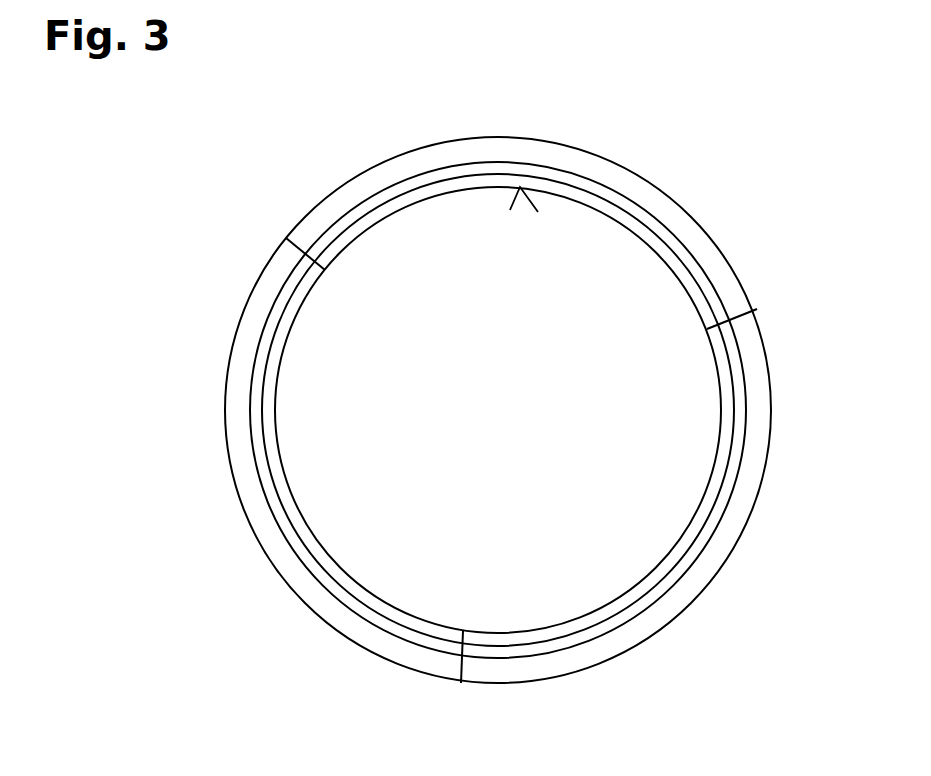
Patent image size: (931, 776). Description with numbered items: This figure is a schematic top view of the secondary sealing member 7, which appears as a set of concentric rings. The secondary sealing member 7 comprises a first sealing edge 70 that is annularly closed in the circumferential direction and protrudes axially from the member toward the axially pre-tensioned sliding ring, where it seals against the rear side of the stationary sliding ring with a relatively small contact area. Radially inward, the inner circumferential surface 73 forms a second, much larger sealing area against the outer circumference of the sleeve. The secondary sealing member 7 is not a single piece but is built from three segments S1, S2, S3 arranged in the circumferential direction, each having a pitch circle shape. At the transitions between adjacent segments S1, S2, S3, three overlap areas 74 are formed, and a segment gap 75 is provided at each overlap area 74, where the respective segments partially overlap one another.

The secondary sealing member 7 is at (716, 192).
The first sealing edge 70 is at (620, 175).
The inner circumferential surface 73 is at (538, 212).
The overlap area 74 is at (272, 215).
The segment gap 75 is at (290, 249).
The first segment S1 is at (464, 155).
The second segment S2 is at (742, 504).
The third segment S3 is at (285, 560).